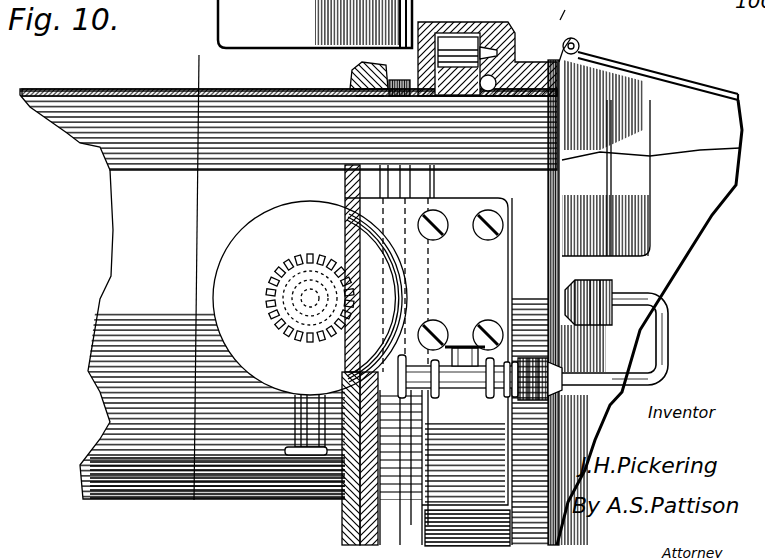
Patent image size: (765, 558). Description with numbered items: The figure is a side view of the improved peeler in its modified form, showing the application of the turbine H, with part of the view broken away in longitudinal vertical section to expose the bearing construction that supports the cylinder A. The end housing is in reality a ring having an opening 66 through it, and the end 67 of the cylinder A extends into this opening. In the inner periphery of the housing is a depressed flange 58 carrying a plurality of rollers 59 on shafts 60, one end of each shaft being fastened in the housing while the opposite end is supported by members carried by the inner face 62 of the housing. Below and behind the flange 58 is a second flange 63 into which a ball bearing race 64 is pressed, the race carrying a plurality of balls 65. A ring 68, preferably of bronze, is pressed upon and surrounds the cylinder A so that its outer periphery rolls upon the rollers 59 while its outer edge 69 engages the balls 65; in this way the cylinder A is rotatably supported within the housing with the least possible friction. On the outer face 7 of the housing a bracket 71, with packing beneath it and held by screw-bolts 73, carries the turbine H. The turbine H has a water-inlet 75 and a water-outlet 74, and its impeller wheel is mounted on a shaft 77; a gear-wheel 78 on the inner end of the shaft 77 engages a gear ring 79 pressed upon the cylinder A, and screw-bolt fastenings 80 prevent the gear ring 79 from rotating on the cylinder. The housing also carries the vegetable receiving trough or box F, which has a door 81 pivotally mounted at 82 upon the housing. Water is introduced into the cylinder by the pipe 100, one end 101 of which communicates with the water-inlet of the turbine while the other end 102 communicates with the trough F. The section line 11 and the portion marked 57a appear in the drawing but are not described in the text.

The cylinder A is at (80, 94).
The turbine H is at (310, 298).
The vegetable receiving trough or box F is at (649, 322).
The outer face of the housing 7 is at (559, 10).
The section line 11 is at (206, 83).
The bracket portion 57a is at (445, 468).
The depressed flange 58 is at (500, 43).
The rollers 59 is at (457, 64).
The shaft 60 is at (392, 44).
The inner face of the housing 62 is at (500, 6).
The flange 63 is at (517, 60).
The ball bearing race 64 is at (560, 88).
The balls 65 is at (577, 43).
The opening 66 is at (684, 100).
The end of the cylinder 67 is at (603, 105).
The ring 68 is at (356, 72).
The outer edge of the ring 69 is at (396, 80).
The bracket 71 is at (426, 351).
The screw-bolts 73 is at (476, 333).
The water-outlet 74 is at (298, 419).
The water-inlet 75 is at (398, 405).
The shaft 77 is at (310, 298).
The gear-wheel 78 is at (283, 290).
The gear ring 79 is at (345, 184).
The screw-bolt fastenings 80 is at (349, 95).
The door 81 is at (666, 78).
The pivot 82 is at (580, 48).
The pipe 100 is at (669, 347).
The end of the pipe 101 is at (551, 397).
The end of the pipe 102 is at (603, 283).